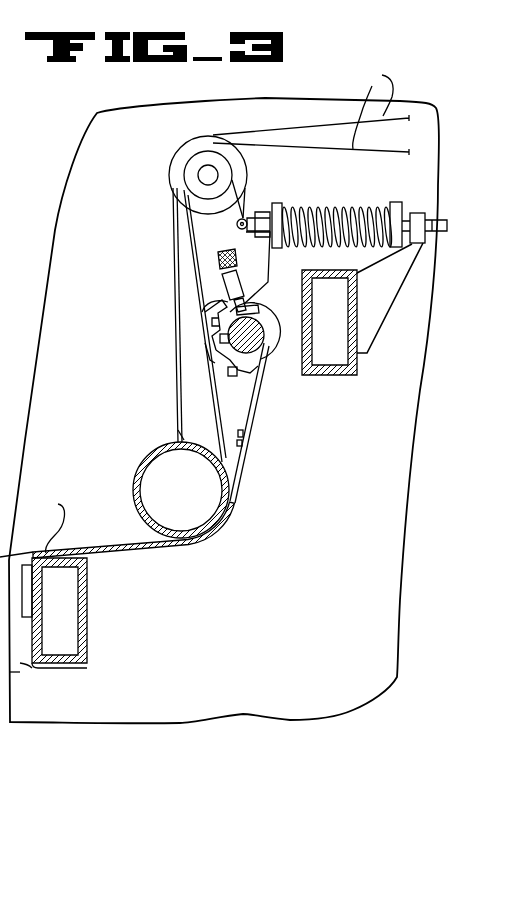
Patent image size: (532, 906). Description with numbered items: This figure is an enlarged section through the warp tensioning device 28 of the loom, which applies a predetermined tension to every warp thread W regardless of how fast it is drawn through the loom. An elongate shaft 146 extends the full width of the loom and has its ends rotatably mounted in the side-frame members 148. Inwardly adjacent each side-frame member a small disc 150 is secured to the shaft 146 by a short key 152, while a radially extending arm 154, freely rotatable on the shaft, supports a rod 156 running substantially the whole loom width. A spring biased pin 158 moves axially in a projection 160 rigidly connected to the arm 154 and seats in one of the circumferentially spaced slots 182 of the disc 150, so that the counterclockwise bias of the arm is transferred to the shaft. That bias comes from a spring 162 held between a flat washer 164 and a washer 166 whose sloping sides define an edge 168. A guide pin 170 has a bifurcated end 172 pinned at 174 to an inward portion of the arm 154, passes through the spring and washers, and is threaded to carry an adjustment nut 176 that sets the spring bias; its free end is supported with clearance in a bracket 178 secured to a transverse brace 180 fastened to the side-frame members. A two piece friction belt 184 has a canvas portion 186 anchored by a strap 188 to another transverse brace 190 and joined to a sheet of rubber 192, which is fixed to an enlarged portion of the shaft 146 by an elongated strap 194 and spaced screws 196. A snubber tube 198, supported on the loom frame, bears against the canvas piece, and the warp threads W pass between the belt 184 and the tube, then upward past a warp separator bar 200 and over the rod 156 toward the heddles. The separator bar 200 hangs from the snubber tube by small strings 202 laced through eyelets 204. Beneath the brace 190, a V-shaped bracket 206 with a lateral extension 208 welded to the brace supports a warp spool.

The warp tensioning device 28 is at (172, 176).
The elongate shaft 146 is at (258, 346).
The side-frame members 148 is at (292, 643).
The small discs 150 is at (218, 352).
The short keys 152 is at (218, 342).
The radially extending arms 154 is at (208, 210).
The rod 156 is at (200, 147).
The spring biased pin 158 is at (228, 280).
The projection 160 is at (222, 302).
The spring 162 is at (331, 203).
The flat washer 164 is at (277, 202).
The washer 166 is at (408, 218).
The edge 168 is at (420, 232).
The guide pin 170 is at (438, 221).
The bifurcated end 172 is at (237, 224).
The pin connection 174 is at (243, 218).
The adjustment nut 176 is at (179, 262).
The bracket 178 is at (393, 273).
The transverse brace 180 is at (352, 371).
The slots 182 is at (220, 338).
The friction belt 184 is at (237, 480).
The canvas portion 186 is at (133, 547).
The strap 188 is at (25, 590).
The transverse brace 190 is at (82, 614).
The sheet of rubber 192 is at (250, 424).
The elongated strap 194 is at (253, 307).
The screws 196 is at (243, 300).
The snubber tube 198 is at (137, 469).
The warp separator bar 200 is at (178, 264).
The small strings 202 is at (176, 412).
The eyelets 204 is at (175, 436).
The V-shaped bracket 206 is at (11, 678).
The lateral extension 208 is at (70, 667).
The warp threads W is at (204, 311).